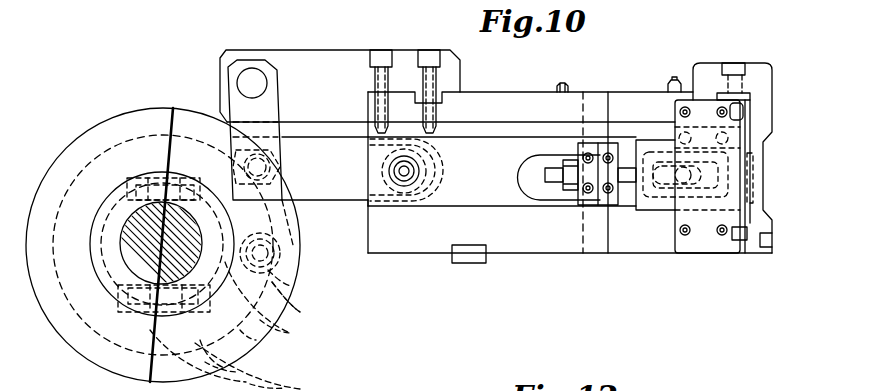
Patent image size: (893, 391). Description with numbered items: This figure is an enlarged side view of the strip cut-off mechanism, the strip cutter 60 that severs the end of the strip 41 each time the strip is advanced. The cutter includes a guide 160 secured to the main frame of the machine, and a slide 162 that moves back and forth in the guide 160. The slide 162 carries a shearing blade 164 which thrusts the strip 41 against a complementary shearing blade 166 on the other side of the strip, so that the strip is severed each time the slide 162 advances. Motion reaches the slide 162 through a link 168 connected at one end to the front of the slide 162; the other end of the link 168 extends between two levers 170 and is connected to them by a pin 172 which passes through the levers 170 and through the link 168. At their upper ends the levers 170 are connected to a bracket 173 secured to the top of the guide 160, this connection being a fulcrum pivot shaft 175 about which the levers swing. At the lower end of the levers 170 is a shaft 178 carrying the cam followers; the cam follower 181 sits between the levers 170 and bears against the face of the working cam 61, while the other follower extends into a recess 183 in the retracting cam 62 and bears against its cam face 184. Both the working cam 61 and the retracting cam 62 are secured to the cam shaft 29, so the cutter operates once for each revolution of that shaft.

The cam shaft 29 is at (150, 263).
The strip 41 is at (765, 175).
The strip cutter 60 is at (328, 42).
The working cam 61 is at (290, 333).
The retracting cam 62 is at (256, 340).
The guide 160 is at (533, 248).
The slide 162 is at (453, 200).
The shearing blade 164 is at (755, 149).
The complementary shearing blade 166 is at (762, 190).
The link 168 is at (337, 193).
The levers 170 is at (163, 222).
The pin 172 is at (270, 165).
The bracket 173 is at (338, 58).
The fulcrum pivot shaft 175 is at (250, 80).
The shaft 178 is at (292, 286).
The cam follower 181 is at (300, 312).
The recess 183 is at (285, 388).
The cam face 184 is at (238, 372).